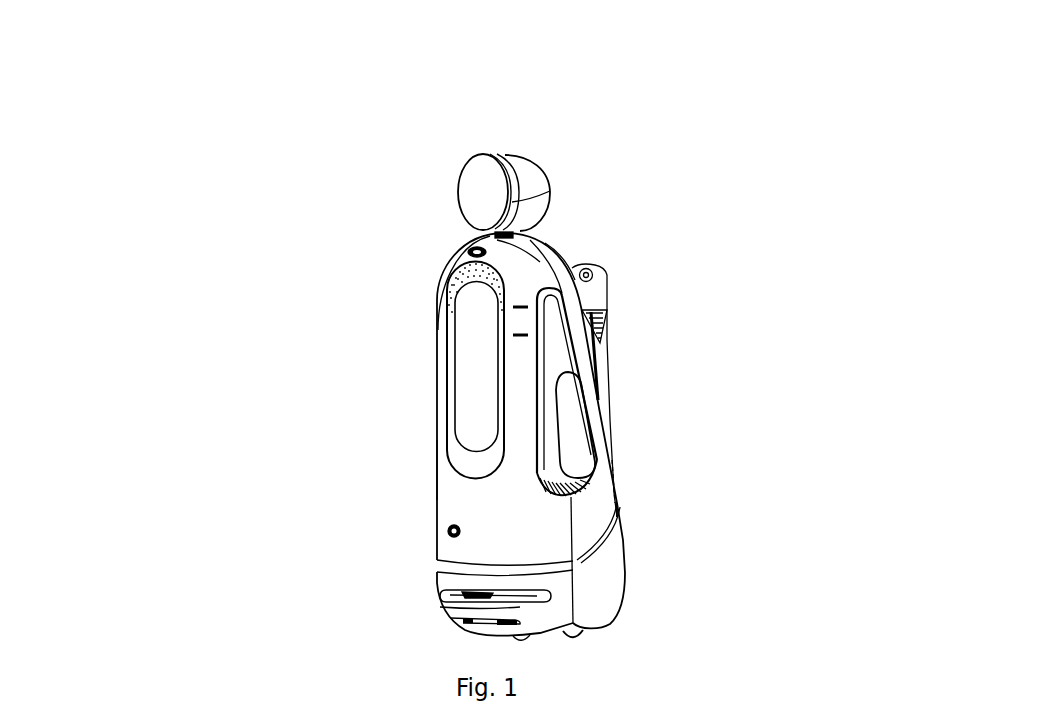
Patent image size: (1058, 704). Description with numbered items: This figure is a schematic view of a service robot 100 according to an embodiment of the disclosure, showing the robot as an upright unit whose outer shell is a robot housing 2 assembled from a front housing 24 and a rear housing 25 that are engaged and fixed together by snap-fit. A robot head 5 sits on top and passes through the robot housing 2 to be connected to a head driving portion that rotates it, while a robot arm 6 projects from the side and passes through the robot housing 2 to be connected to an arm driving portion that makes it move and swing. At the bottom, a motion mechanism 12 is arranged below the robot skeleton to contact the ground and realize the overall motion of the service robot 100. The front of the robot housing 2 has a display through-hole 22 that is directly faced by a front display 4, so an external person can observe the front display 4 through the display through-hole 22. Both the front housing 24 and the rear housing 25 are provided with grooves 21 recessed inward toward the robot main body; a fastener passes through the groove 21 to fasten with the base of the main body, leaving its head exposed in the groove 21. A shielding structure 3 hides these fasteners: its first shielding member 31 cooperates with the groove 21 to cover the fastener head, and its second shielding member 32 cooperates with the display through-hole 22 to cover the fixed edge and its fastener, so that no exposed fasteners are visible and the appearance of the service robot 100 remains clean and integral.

The service robot 100 is at (72, 32).
The robot housing 2 is at (645, 110).
The shielding structure 3 is at (183, 527).
The front display 4 is at (473, 335).
The robot head 5 is at (520, 160).
The robot arm 6 is at (541, 358).
The motion mechanism 12 is at (580, 634).
The groove 21 is at (520, 622).
The display through-hole 22 is at (445, 287).
The front housing 24 is at (517, 265).
The rear housing 25 is at (555, 267).
The first shielding member 31 is at (460, 618).
The second shielding member 32 is at (452, 453).